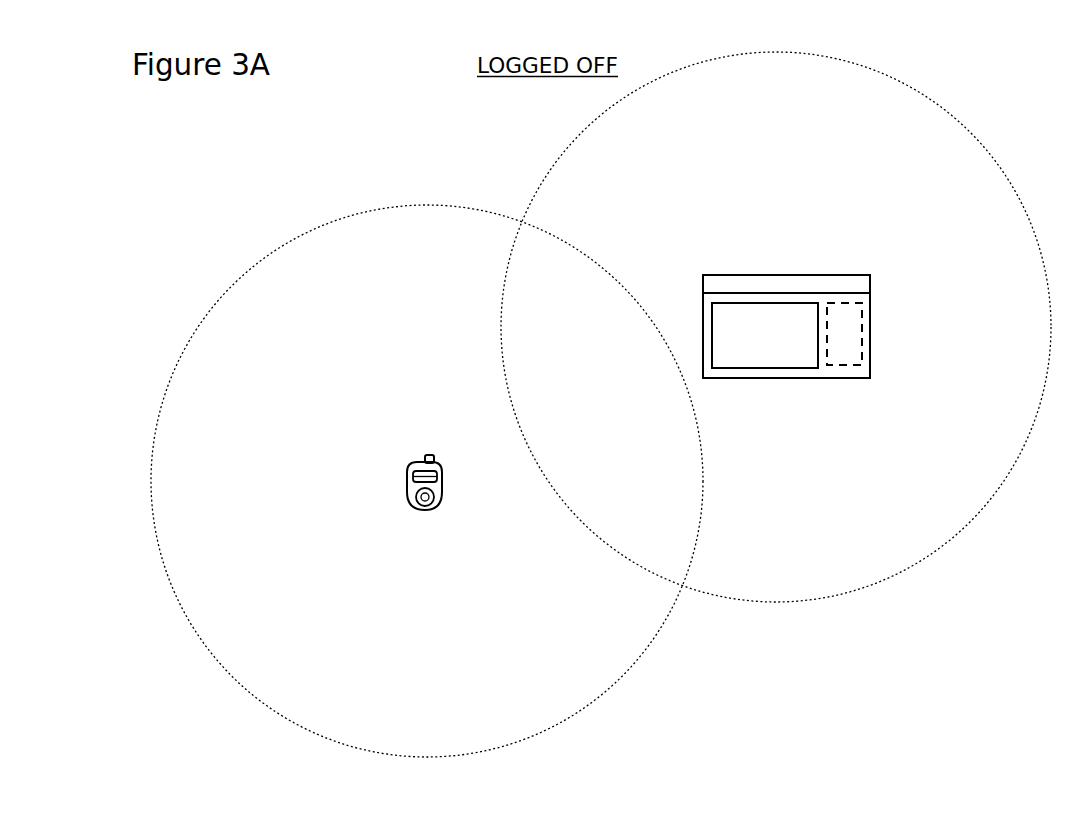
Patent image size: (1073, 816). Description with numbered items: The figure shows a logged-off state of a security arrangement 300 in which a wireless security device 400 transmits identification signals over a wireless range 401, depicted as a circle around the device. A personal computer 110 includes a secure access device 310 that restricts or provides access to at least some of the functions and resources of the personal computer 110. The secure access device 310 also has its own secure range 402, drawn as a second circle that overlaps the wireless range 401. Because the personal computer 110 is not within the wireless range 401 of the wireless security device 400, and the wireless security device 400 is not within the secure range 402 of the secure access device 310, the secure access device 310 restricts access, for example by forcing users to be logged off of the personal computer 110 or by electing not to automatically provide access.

The security environment 300 is at (994, 107).
The secure range 402 is at (546, 180).
The wireless range 401 is at (657, 630).
The secure access device 310 is at (810, 366).
The personal computer 110 is at (780, 351).
The wireless security device 400 is at (462, 522).